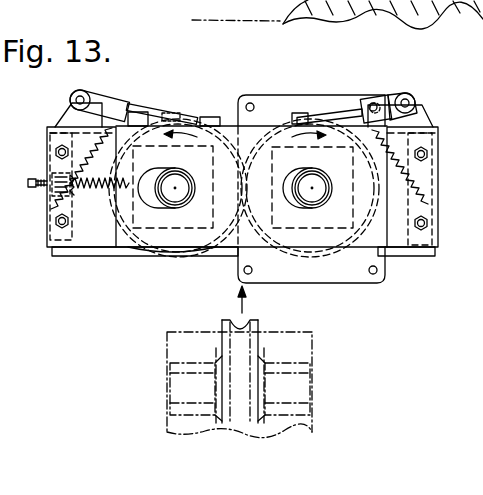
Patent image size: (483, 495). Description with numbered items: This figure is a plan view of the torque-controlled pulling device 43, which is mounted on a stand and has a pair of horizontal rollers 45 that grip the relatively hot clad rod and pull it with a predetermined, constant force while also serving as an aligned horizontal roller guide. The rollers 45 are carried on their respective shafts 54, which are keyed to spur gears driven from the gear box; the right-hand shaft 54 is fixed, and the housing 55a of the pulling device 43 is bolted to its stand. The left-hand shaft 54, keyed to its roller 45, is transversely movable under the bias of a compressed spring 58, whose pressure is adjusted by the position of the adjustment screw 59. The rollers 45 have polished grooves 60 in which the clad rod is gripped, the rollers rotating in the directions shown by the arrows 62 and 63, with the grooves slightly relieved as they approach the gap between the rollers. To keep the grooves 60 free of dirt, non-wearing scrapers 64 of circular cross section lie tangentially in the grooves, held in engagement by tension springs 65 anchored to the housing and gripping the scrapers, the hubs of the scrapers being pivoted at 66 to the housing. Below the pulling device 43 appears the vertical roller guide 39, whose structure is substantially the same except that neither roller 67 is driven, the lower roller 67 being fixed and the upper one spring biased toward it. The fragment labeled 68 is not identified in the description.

The vertical roller guide 39 is at (315, 347).
The torque-controlled pulling device 43 is at (96, 248).
The horizontal rollers 45 is at (160, 248).
The shafts 54 is at (177, 195).
The housing 55a is at (424, 181).
The compressed spring 58 is at (96, 198).
The adjustment screw 59 is at (37, 178).
The grooves 60 is at (118, 237).
The arrow 62 is at (180, 124).
The arrow 63 is at (313, 130).
The scrapers 64 is at (165, 128).
The tension springs 65 is at (100, 142).
The pivot 66 is at (76, 100).
The roller 67 is at (224, 319).
The belt 68 is at (192, 20).